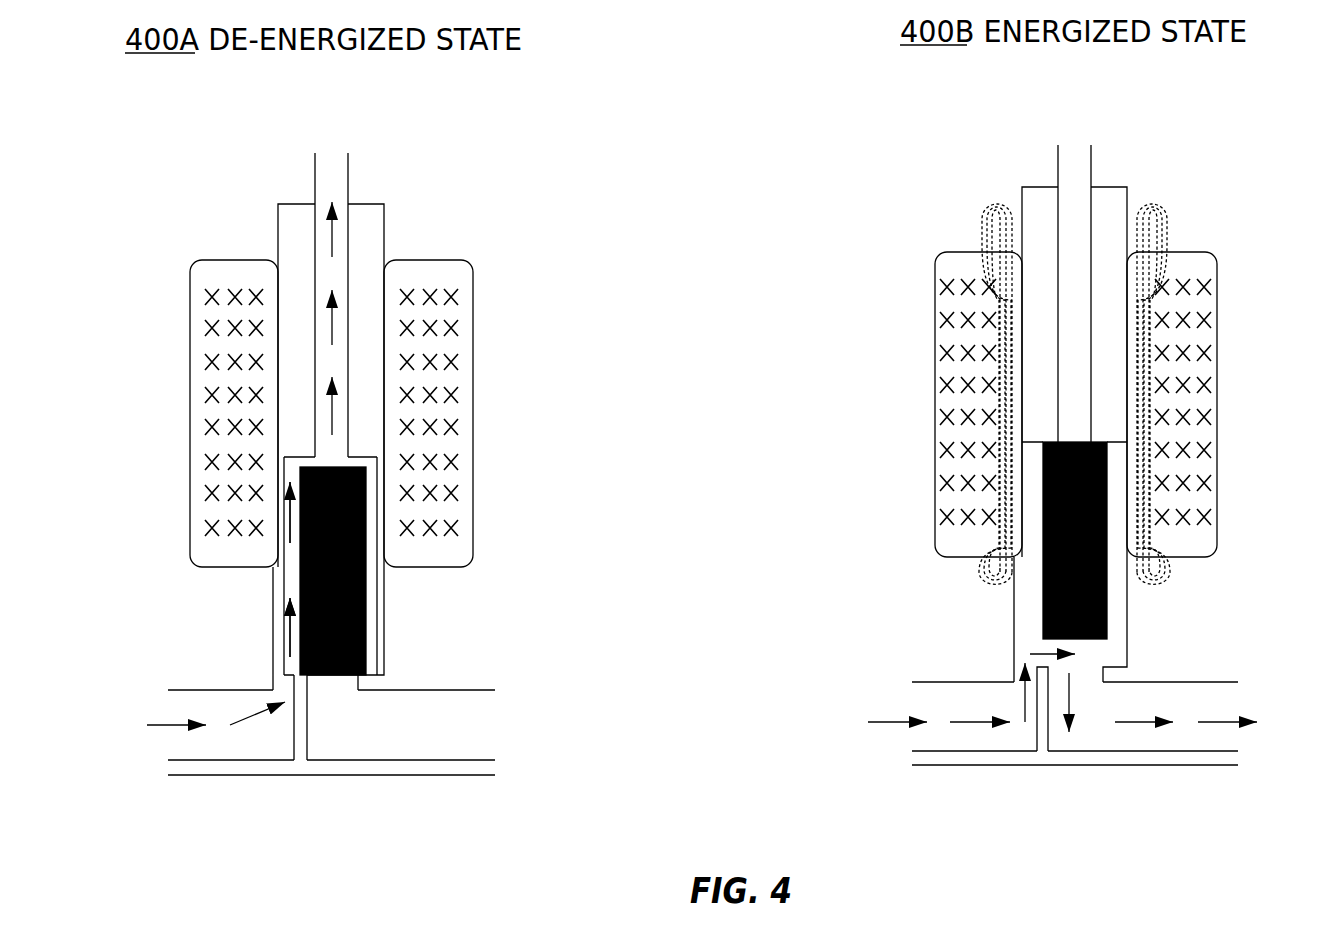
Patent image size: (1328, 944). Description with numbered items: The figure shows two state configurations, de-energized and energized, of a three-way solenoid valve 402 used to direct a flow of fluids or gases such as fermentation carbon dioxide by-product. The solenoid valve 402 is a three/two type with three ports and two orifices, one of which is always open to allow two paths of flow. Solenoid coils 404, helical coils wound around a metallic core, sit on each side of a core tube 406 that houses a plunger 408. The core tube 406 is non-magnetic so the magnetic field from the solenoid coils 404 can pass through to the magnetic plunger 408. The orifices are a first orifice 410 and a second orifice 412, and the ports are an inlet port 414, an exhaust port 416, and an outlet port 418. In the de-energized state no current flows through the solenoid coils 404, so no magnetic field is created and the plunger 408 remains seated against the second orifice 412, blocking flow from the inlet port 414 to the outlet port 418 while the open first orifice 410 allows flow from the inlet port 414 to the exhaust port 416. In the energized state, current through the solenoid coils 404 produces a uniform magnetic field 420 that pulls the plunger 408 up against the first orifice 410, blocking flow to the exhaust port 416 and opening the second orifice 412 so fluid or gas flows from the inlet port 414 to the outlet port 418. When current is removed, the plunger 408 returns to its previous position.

The three-way solenoid valve 402 is at (224, 124).
The solenoid coils 404 is at (228, 277).
The core tube 406 is at (277, 233).
The plunger 408 is at (367, 587).
The first orifice 410 is at (332, 450).
The second orifice 412 is at (327, 683).
The inlet port 414 is at (202, 690).
The exhaust port 416 is at (327, 157).
The outlet port 418 is at (460, 762).
The uniform magnetic field 420 is at (1163, 232).